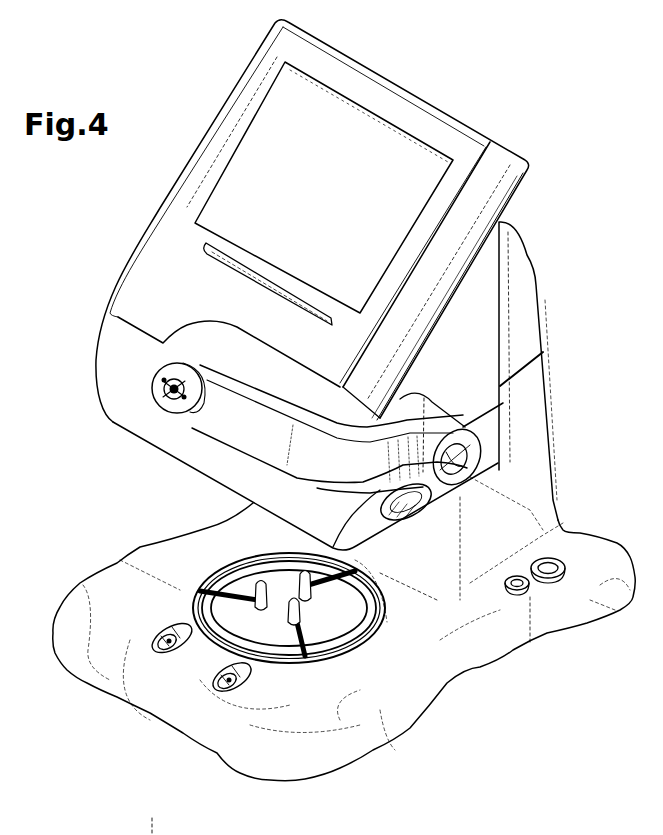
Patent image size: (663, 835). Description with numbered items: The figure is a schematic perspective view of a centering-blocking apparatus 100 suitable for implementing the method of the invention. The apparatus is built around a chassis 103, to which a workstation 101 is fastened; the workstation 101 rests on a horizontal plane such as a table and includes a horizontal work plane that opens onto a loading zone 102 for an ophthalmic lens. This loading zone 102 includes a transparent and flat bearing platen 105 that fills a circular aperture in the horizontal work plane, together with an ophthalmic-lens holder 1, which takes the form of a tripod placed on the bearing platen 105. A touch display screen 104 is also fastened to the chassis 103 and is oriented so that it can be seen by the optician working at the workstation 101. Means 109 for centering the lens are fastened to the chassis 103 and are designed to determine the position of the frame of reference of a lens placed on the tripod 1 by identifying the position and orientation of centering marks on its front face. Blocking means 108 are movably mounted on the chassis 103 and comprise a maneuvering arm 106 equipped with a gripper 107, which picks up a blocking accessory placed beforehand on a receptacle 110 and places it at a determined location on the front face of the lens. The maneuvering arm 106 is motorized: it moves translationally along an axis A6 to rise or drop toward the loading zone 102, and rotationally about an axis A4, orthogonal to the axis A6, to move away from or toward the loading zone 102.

The ophthalmic-lens holder 1 is at (387, 625).
The centering-blocking apparatus 100 is at (573, 130).
The workstation 101 is at (300, 714).
The loading zone 102 is at (217, 648).
The chassis 103 is at (531, 398).
The touch display screen 104 is at (365, 128).
The bearing platen 105 is at (257, 627).
The maneuvering arm 106 is at (343, 381).
The gripper 107 is at (150, 404).
The blocking means 108 is at (228, 449).
The centering means 109 is at (501, 345).
The receptacle 110 is at (160, 638).
The rotation axis A4 is at (528, 517).
The translation axis A6 is at (425, 398).